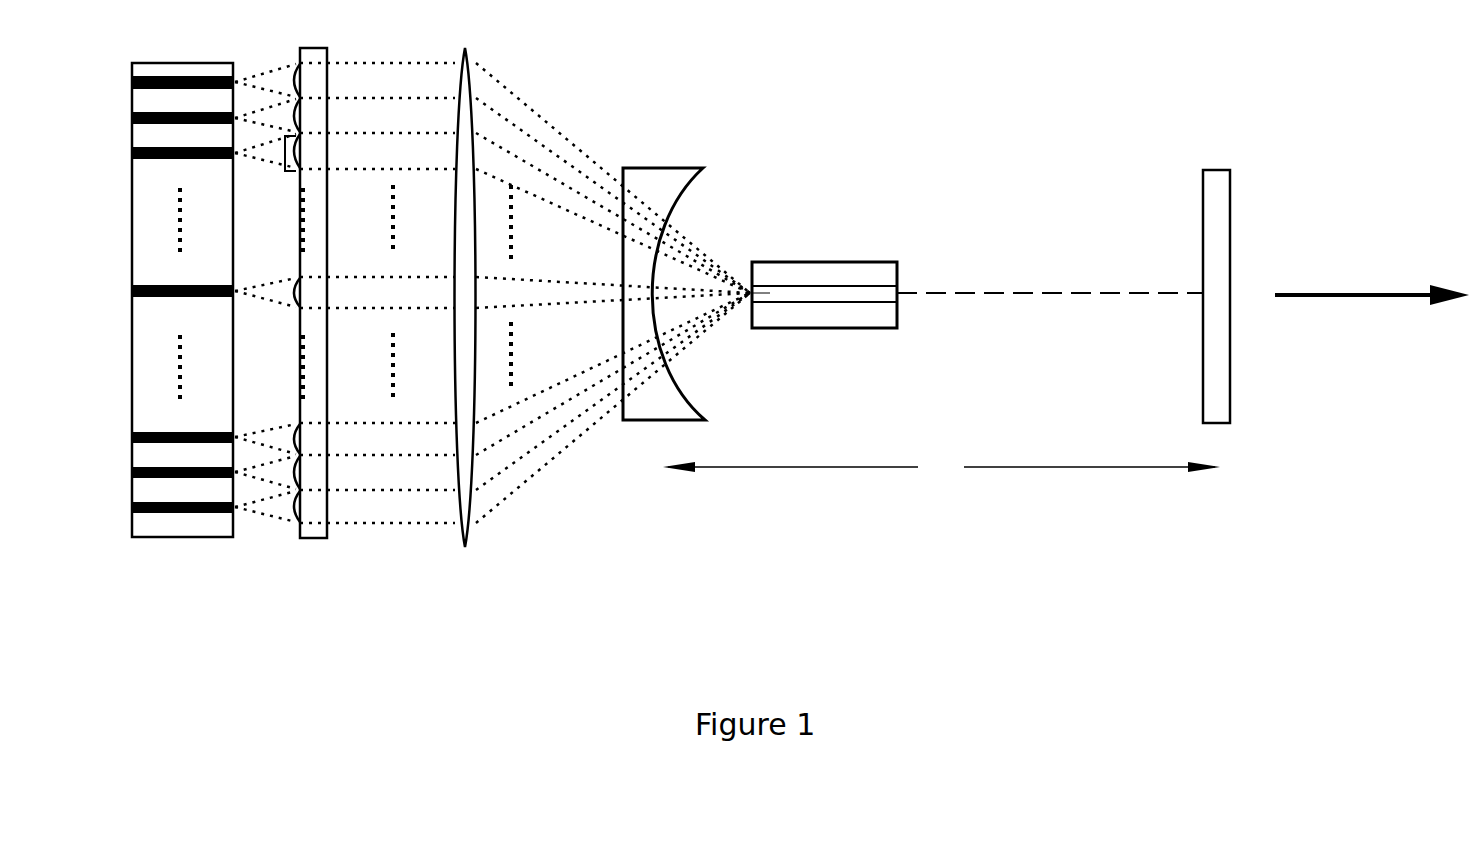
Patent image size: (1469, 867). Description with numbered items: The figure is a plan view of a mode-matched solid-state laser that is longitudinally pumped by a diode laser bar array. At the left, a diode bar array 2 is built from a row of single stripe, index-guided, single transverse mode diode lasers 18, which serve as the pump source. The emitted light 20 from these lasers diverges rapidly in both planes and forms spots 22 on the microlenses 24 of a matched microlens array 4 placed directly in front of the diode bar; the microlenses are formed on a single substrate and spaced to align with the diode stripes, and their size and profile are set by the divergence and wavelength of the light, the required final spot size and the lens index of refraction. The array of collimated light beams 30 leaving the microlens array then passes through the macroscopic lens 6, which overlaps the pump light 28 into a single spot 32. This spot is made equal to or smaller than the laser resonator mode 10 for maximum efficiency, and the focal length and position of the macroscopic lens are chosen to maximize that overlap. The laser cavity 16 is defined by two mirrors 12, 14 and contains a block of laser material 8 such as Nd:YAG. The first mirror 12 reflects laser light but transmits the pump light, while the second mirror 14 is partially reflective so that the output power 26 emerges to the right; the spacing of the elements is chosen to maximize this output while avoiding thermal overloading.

The diode bar array 2 is at (145, 272).
The single transverse mode diode lasers 18 is at (131, 118).
The emitted light 20 is at (270, 70).
The microlens array 4 is at (287, 269).
The spots 22 is at (284, 142).
The microlenses 24 is at (293, 305).
The collimated light beams 30 is at (395, 62).
The macroscopic lens 6 is at (467, 48).
The pump light 28 is at (535, 115).
The mirror 12 is at (660, 167).
The laser material 8 is at (860, 262).
The laser resonator mode 10 is at (761, 296).
The single spot 32 is at (750, 305).
The mirror 14 is at (1219, 170).
The output power 26 is at (1350, 292).
The laser cavity 16 is at (941, 468).